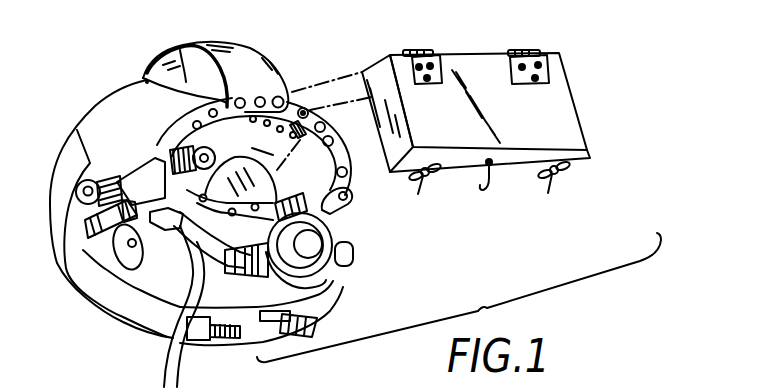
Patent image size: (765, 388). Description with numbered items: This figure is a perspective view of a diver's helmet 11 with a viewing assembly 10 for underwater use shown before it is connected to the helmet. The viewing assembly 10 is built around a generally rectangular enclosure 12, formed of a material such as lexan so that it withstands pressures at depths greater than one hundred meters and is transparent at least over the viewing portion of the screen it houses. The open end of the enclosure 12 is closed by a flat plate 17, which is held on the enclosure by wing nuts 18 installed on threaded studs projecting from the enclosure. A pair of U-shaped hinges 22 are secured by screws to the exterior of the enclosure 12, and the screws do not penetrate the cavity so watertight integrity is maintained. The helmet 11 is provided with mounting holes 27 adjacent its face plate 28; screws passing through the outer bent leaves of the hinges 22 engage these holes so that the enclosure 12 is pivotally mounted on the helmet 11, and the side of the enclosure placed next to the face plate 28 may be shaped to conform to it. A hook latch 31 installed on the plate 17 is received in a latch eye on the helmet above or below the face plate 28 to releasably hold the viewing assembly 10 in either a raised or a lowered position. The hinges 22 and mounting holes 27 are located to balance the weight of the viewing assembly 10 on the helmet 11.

The viewing assembly 10 is at (586, 74).
The diver's helmet 11 is at (147, 276).
The enclosure 12 is at (558, 117).
The plate 17 is at (588, 153).
The wing nuts 18 is at (417, 194).
The U-shaped hinges 22 is at (515, 63).
The mounting holes 27 is at (145, 80).
The face plate 28 is at (350, 215).
The hook latch 31 is at (488, 194).